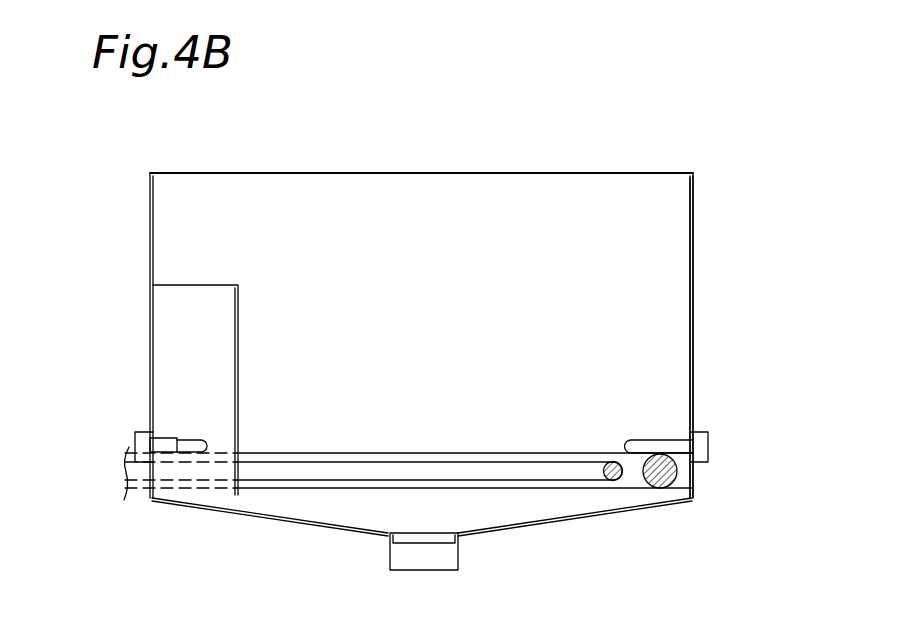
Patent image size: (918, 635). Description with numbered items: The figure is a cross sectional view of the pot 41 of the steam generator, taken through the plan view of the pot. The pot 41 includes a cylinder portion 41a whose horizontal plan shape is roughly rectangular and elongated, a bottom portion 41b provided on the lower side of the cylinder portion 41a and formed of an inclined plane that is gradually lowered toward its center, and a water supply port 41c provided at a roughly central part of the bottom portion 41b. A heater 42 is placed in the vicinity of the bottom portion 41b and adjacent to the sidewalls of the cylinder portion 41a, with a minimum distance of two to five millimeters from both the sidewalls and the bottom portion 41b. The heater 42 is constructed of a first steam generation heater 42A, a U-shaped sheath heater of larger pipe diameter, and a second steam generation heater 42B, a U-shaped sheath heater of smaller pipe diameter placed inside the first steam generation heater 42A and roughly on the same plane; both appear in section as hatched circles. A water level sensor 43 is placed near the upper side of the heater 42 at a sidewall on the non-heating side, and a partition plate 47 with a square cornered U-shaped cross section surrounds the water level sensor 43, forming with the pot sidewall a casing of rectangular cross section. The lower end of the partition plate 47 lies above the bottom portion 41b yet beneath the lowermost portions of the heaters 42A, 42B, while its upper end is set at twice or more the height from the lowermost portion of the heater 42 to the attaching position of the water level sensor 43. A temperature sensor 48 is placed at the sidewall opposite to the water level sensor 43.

The pot 41 is at (697, 206).
The cylinder portion 41a is at (692, 362).
The bottom portion 41b is at (277, 518).
The water supply port 41c is at (410, 553).
The heater 42 is at (725, 552).
The first steam generation heater 42A is at (630, 473).
The second steam generation heater 42B is at (565, 472).
The water level sensor 43 is at (187, 438).
The partition plate 47 is at (238, 315).
The temperature sensor 48 is at (655, 443).